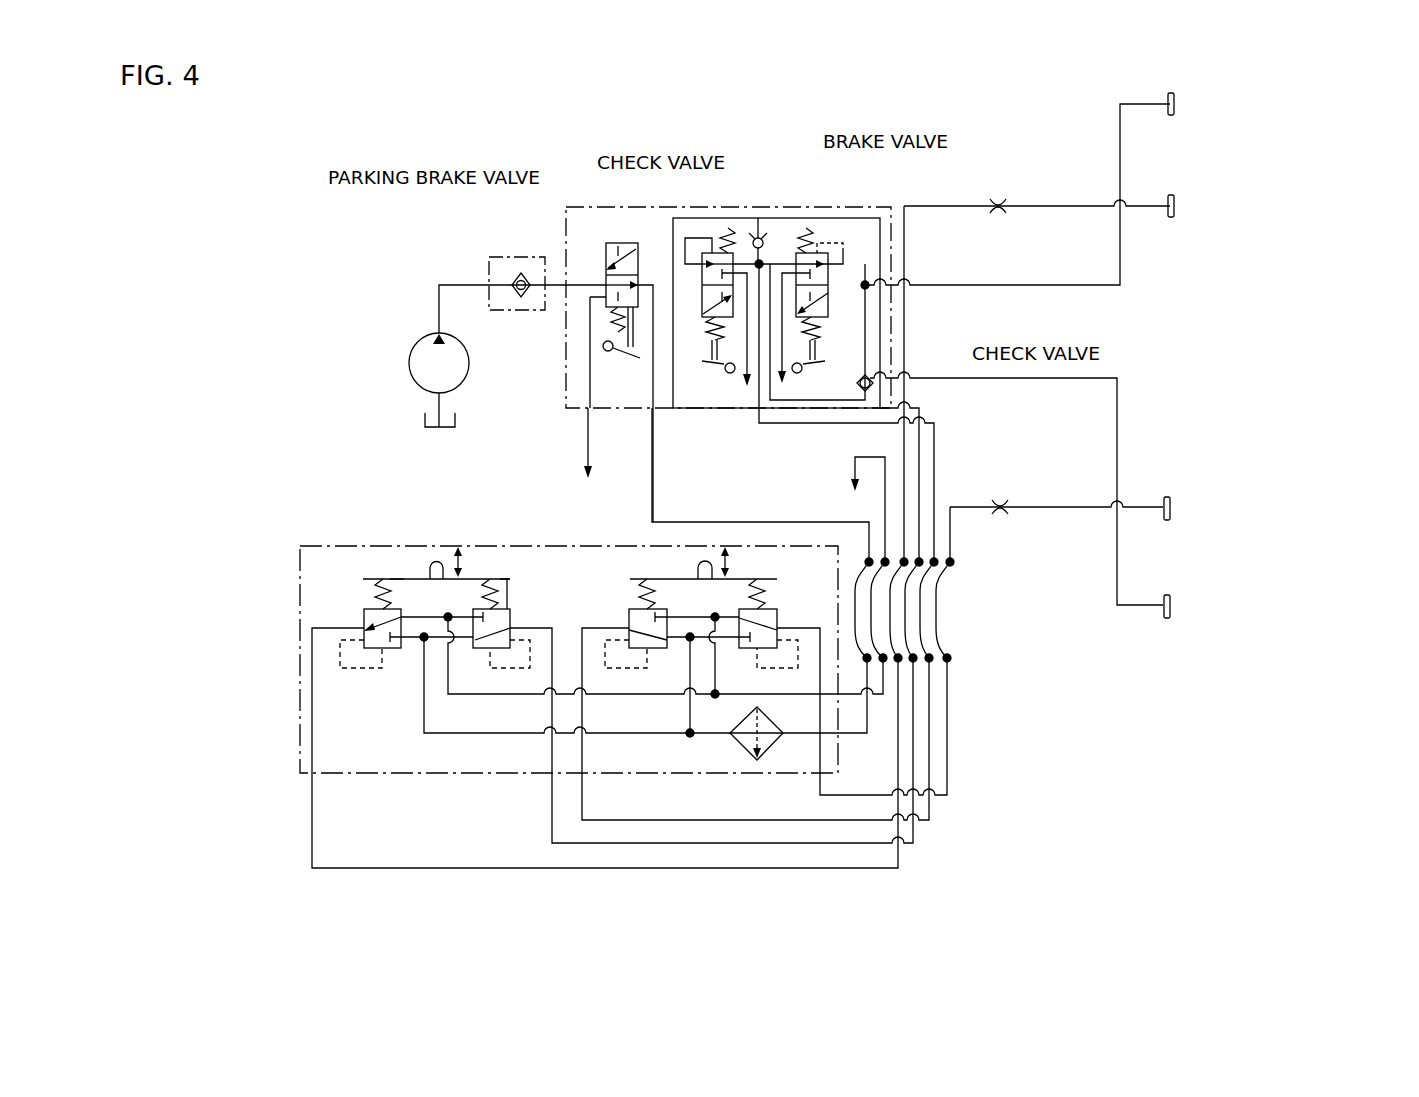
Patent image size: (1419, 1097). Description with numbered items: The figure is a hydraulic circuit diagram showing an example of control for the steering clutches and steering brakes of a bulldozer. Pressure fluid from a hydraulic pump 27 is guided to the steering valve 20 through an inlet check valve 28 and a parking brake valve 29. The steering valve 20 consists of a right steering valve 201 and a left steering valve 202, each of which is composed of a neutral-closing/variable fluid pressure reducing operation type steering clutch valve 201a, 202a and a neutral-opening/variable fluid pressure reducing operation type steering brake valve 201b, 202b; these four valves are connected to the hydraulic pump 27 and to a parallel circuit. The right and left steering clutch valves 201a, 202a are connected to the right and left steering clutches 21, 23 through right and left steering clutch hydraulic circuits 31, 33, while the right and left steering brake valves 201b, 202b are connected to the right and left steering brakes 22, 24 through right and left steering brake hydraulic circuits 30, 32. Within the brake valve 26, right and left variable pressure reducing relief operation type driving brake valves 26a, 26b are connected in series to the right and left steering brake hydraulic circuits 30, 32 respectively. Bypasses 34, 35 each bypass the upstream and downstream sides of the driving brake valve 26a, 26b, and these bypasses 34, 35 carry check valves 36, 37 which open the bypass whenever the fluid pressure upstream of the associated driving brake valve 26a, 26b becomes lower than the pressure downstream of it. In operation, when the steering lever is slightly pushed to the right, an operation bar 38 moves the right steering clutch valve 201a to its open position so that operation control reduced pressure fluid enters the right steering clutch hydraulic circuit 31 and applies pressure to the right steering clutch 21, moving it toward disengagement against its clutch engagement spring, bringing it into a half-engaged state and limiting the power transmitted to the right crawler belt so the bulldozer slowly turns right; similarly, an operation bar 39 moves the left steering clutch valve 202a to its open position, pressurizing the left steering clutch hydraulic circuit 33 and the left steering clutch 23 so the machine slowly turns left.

The steering valve 20 is at (300, 546).
The right steering clutch 21 is at (1174, 206).
The right steering brake 22 is at (1174, 104).
The left steering clutch 23 is at (1170, 508).
The left steering brake 24 is at (1170, 606).
The driving brake valve 26 is at (786, 236).
The right driving brake valve 26a is at (813, 253).
The left driving brake valve 26b is at (703, 316).
The hydraulic pump 27 is at (490, 356).
The inlet check valve 28 is at (534, 257).
The parking brake valve 29 is at (608, 243).
The right steering brake hydraulic circuit 30 is at (538, 628).
The right steering clutch hydraulic circuit 31 is at (348, 625).
The left steering brake hydraulic circuit 32 is at (605, 628).
The left steering clutch hydraulic circuit 33 is at (808, 628).
The bypass 34 is at (867, 340).
The bypass 35 is at (756, 216).
The check valve 36 is at (871, 380).
The check valve 37 is at (753, 240).
The operation bar 38 is at (418, 579).
The operation bar 39 is at (680, 579).
The right steering valve 201 is at (358, 592).
The right steering clutch valve 201a is at (397, 579).
The right steering brake valve 201b is at (507, 579).
The left steering valve 202 is at (619, 598).
The left steering clutch valve 202a is at (779, 646).
The left steering brake valve 202b is at (655, 648).